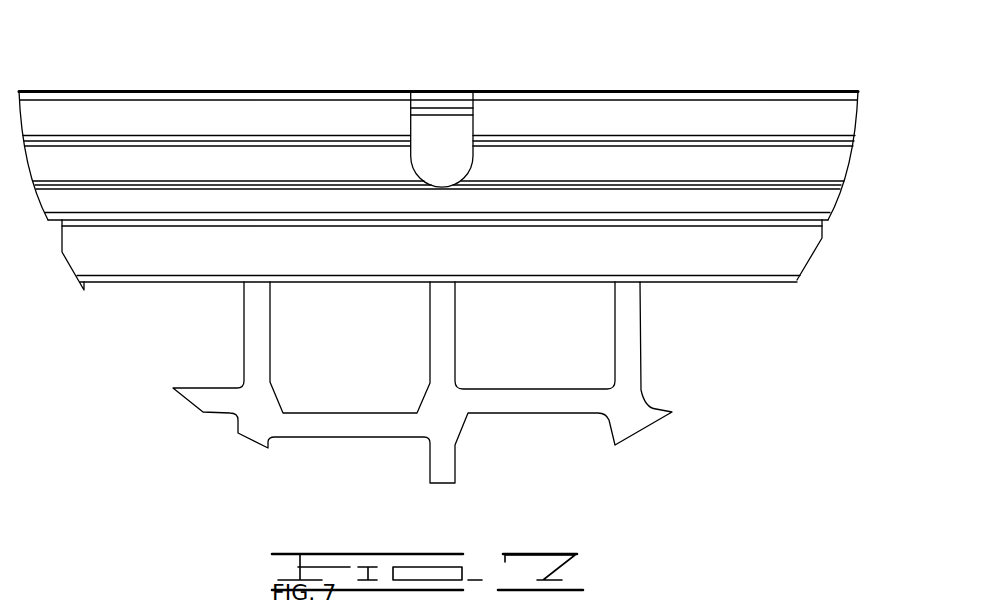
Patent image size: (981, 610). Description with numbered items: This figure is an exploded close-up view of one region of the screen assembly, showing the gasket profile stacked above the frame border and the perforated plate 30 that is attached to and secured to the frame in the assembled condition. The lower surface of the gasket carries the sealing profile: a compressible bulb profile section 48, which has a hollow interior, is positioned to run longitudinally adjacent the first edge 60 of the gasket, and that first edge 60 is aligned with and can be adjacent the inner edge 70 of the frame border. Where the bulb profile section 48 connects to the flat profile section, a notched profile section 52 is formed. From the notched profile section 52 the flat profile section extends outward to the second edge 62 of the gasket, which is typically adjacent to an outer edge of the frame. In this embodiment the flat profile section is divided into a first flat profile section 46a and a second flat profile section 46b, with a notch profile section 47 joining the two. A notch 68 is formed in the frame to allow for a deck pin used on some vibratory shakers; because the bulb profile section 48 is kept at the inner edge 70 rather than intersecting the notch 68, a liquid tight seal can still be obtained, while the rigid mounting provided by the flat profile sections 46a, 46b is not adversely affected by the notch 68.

The second edge 62 is at (793, 100).
The first flat profile section 46a is at (832, 118).
The notch profile section 47 is at (848, 142).
The second flat profile section 46b is at (832, 162).
The notched profile section 52 is at (835, 185).
The bulb profile section 48 is at (822, 202).
The first edge 60 is at (792, 222).
The inner edge 70 is at (732, 283).
The notch 68 is at (412, 125).
The perforated plate 30 is at (300, 437).